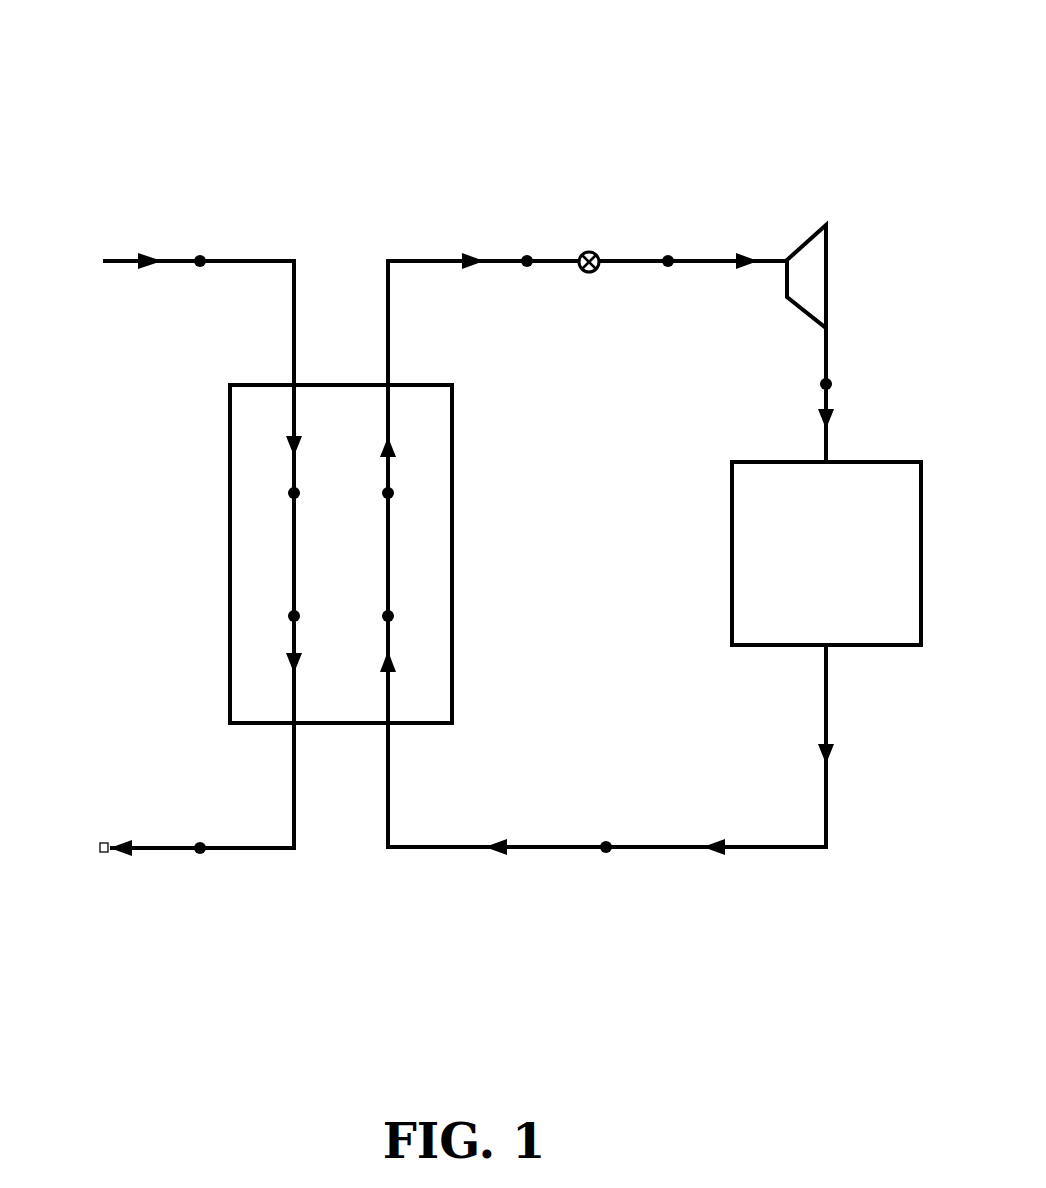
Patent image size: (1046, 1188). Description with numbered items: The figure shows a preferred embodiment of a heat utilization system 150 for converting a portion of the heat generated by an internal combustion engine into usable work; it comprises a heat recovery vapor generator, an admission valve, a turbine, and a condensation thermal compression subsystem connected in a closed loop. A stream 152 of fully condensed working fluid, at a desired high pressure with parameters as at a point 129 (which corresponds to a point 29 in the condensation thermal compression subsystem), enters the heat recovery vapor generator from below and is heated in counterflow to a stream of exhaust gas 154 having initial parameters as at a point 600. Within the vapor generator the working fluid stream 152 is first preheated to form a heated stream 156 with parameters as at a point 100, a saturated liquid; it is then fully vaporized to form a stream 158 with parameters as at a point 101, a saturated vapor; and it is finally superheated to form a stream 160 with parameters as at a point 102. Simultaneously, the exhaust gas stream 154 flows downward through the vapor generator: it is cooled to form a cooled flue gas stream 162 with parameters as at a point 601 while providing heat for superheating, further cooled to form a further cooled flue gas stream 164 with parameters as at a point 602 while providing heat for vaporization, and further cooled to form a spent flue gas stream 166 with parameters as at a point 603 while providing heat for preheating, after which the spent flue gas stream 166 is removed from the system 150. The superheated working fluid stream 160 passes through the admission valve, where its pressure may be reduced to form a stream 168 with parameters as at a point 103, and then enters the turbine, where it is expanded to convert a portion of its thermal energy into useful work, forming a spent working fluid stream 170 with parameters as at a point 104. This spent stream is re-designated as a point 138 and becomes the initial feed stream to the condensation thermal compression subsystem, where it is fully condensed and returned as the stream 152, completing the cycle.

The heat utilization system 150 is at (484, 112).
The stream of fully condensed working fluid 152 is at (535, 852).
The stream of exhaust gas 154 is at (247, 258).
The heated stream 156 is at (390, 638).
The stream of working fluid 158 is at (390, 478).
The superheated working fluid stream 160 is at (452, 257).
The cooled flue gas stream 162 is at (290, 474).
The further cooled flue gas stream 164 is at (292, 640).
The spent flue gas stream 166 is at (258, 850).
The stream of working fluid after admission valve 168 is at (708, 258).
The spent working fluid stream 170 is at (828, 363).
The point of initial exhaust gas parameters 600 is at (200, 249).
The point of cooled flue gas parameters 601 is at (273, 492).
The point of further cooled flue gas parameters 602 is at (273, 615).
The point of spent flue gas parameters 603 is at (200, 832).
The point of saturated liquid parameters 100 is at (410, 615).
The point of saturated vapor parameters 101 is at (410, 492).
The point of superheated working fluid parameters 102 is at (527, 249).
The point of working fluid parameters after admission valve 103 is at (668, 249).
The point of spent working fluid parameters 104 is at (849, 383).
The point of initial CTCSS feed stream parameters 138 is at (800, 383).
The point of fully condensed working fluid parameters 129 is at (606, 832).
The point in the CTCSS corresponding to point 129 29 is at (606, 869).